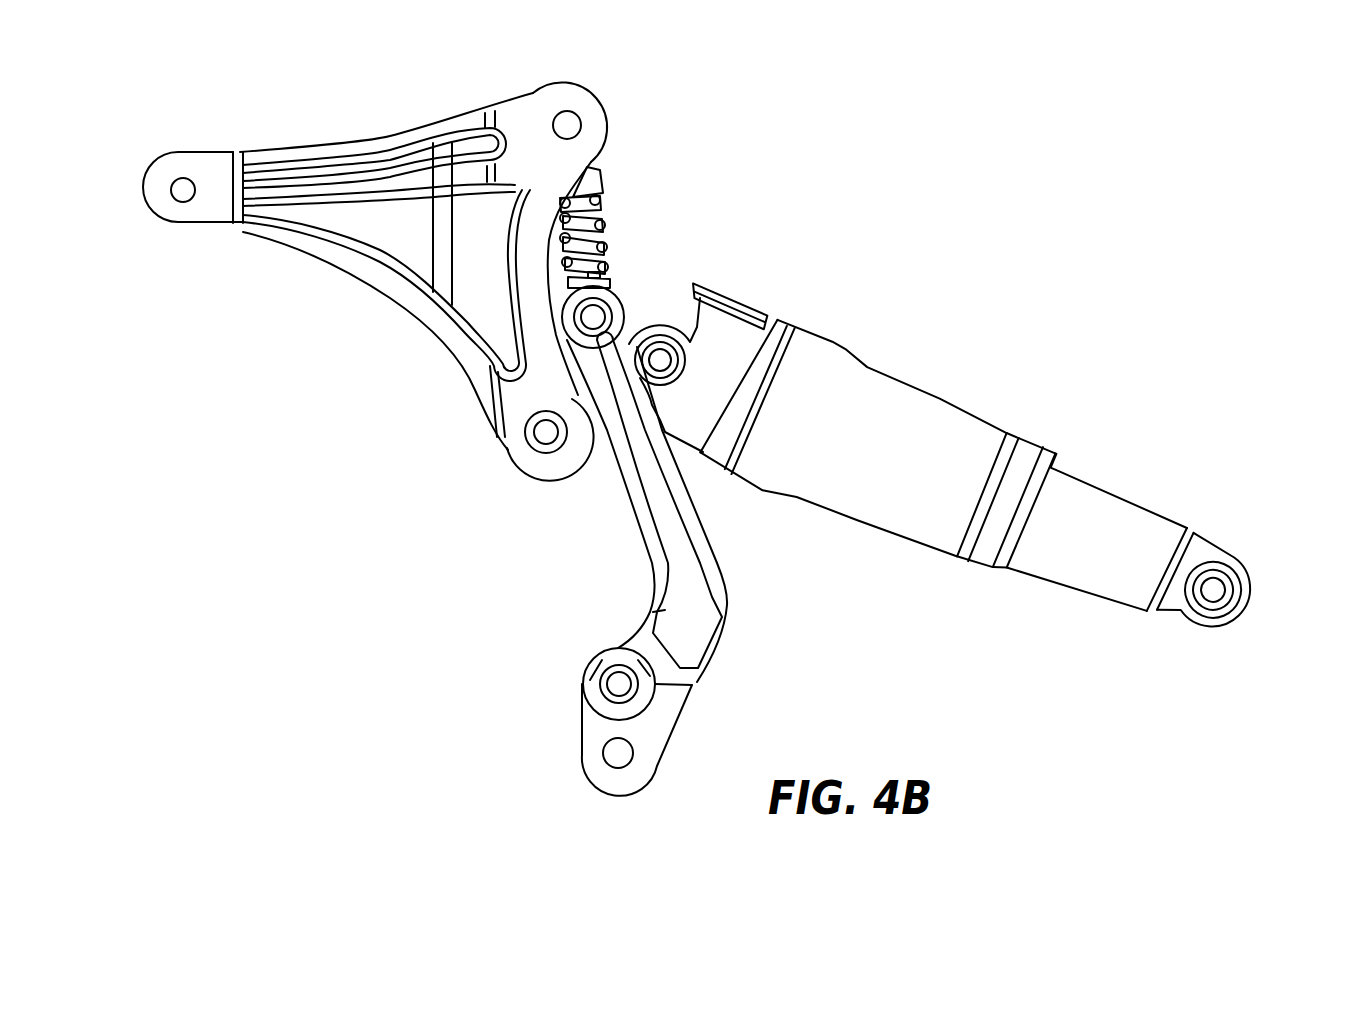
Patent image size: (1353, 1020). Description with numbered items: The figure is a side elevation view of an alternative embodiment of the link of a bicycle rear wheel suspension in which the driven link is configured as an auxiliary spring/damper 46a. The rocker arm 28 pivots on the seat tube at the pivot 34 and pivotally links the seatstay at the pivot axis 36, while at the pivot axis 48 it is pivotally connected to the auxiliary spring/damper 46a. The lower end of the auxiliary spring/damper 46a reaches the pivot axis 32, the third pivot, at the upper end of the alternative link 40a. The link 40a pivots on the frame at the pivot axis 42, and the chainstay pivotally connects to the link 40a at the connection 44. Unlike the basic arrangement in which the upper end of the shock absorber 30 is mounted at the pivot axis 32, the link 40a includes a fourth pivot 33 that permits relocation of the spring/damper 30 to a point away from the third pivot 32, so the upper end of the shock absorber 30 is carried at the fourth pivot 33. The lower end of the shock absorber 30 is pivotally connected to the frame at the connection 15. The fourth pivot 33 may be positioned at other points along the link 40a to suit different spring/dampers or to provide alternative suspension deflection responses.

The connection 15 is at (1214, 580).
The rocker arm 28 is at (428, 335).
The shock absorber 30 is at (953, 400).
The pivot axis 32 is at (606, 314).
The fourth pivot 33 is at (672, 359).
The pivot 34 is at (540, 448).
The pivot axis 36 is at (185, 195).
The link 40a is at (713, 549).
The pivot axis 42 is at (600, 678).
The pivot connection 44 is at (633, 756).
The auxiliary spring/damper 46a is at (603, 207).
The pivot axis 48 is at (585, 125).